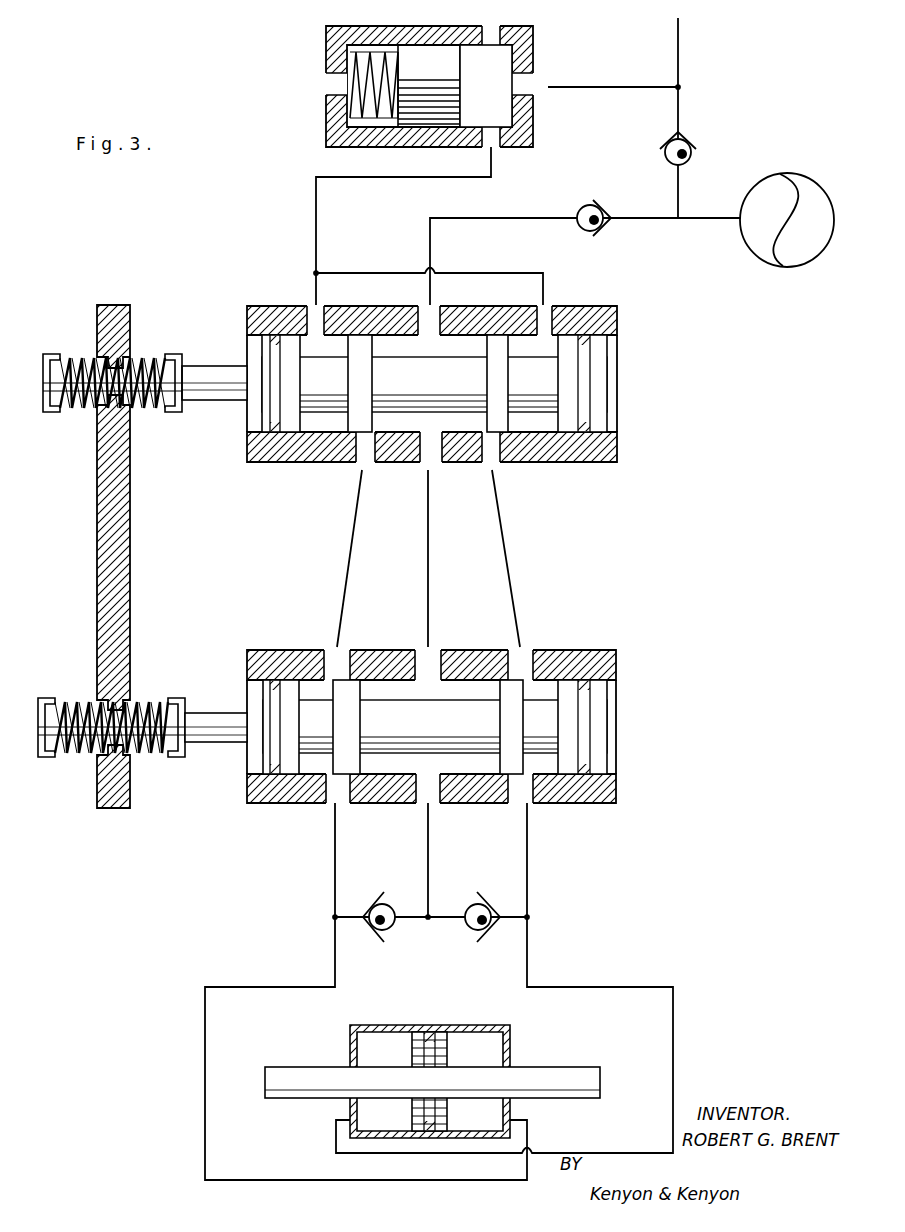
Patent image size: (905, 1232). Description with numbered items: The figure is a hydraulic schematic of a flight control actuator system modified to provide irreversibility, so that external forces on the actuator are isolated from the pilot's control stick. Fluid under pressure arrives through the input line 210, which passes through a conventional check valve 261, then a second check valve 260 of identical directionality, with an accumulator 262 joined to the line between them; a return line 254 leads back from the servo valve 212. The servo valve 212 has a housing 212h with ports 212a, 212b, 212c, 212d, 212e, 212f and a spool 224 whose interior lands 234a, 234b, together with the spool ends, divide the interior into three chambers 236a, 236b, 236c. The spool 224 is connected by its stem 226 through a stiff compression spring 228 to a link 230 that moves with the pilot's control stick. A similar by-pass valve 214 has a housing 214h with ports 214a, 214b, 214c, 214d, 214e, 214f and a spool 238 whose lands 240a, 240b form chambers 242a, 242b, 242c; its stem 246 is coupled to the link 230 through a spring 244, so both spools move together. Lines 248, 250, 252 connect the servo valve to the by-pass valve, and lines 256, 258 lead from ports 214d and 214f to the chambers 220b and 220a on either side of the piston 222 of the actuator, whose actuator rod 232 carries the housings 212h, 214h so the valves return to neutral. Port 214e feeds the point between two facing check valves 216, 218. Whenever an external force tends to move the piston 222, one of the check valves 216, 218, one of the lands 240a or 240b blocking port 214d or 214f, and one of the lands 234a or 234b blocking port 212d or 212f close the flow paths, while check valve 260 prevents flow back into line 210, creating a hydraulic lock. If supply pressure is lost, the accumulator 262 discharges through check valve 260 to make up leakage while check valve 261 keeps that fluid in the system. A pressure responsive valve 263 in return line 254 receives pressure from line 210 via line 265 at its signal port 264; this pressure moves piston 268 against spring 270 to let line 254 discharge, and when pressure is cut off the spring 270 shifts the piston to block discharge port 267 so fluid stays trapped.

The pressure line 210 is at (430, 238).
The servo valve 212 is at (437, 390).
The servo valve port 212a is at (305, 305).
The servo valve port 212b is at (418, 306).
The servo valve port 212c is at (537, 306).
The servo valve port 212d is at (363, 452).
The servo valve port 212e is at (425, 452).
The servo valve port 212f is at (488, 452).
The servo valve housing 212h is at (617, 320).
The by-pass valve 214 is at (426, 727).
The by-pass valve port 214a is at (334, 650).
The by-pass valve port 214b is at (424, 650).
The by-pass valve port 214c is at (516, 650).
The by-pass valve port 214d is at (334, 796).
The by-pass valve port 214e is at (424, 796).
The by-pass valve port 214f is at (519, 796).
The by-pass valve housing 214h is at (616, 660).
The check valve 216 is at (403, 896).
The check valve 218 is at (505, 897).
The actuator chamber 220a is at (446, 1086).
The actuator chamber 220b is at (473, 1040).
The piston 222 is at (440, 1128).
The servo valve spool 224 is at (617, 365).
The servo valve stem 226 is at (218, 402).
The compression spring 228 is at (72, 352).
The link 230 is at (132, 546).
The actuator rod 232 is at (598, 1069).
The servo valve land 234a is at (355, 384).
The servo valve land 234b is at (498, 388).
The servo valve chamber 236a is at (317, 420).
The servo valve chamber 236b is at (460, 348).
The servo valve chamber 236c is at (532, 423).
The by-pass valve spool 238 is at (616, 718).
The by-pass valve land 240a is at (360, 718).
The by-pass valve land 240b is at (500, 718).
The by-pass valve chamber 242a is at (310, 765).
The by-pass valve chamber 242b is at (478, 760).
The by-pass valve chamber 242c is at (545, 765).
The compression spring 244 is at (145, 708).
The by-pass valve stem 246 is at (203, 743).
The connecting line 248 is at (348, 586).
The connecting line 250 is at (430, 586).
The connecting line 252 is at (536, 580).
The return line 254 is at (316, 228).
The actuator line 256 is at (235, 985).
The actuator line 258 is at (636, 985).
The check valve 260 is at (600, 205).
The check valve 261 is at (700, 157).
The accumulator 262 is at (800, 178).
The pressure responsive valve 263 is at (427, 77).
The signal port 264 is at (532, 92).
The signal line 265 is at (617, 87).
The discharge port 267 is at (495, 26).
The piston 268 is at (427, 63).
The spring 270 is at (340, 108).